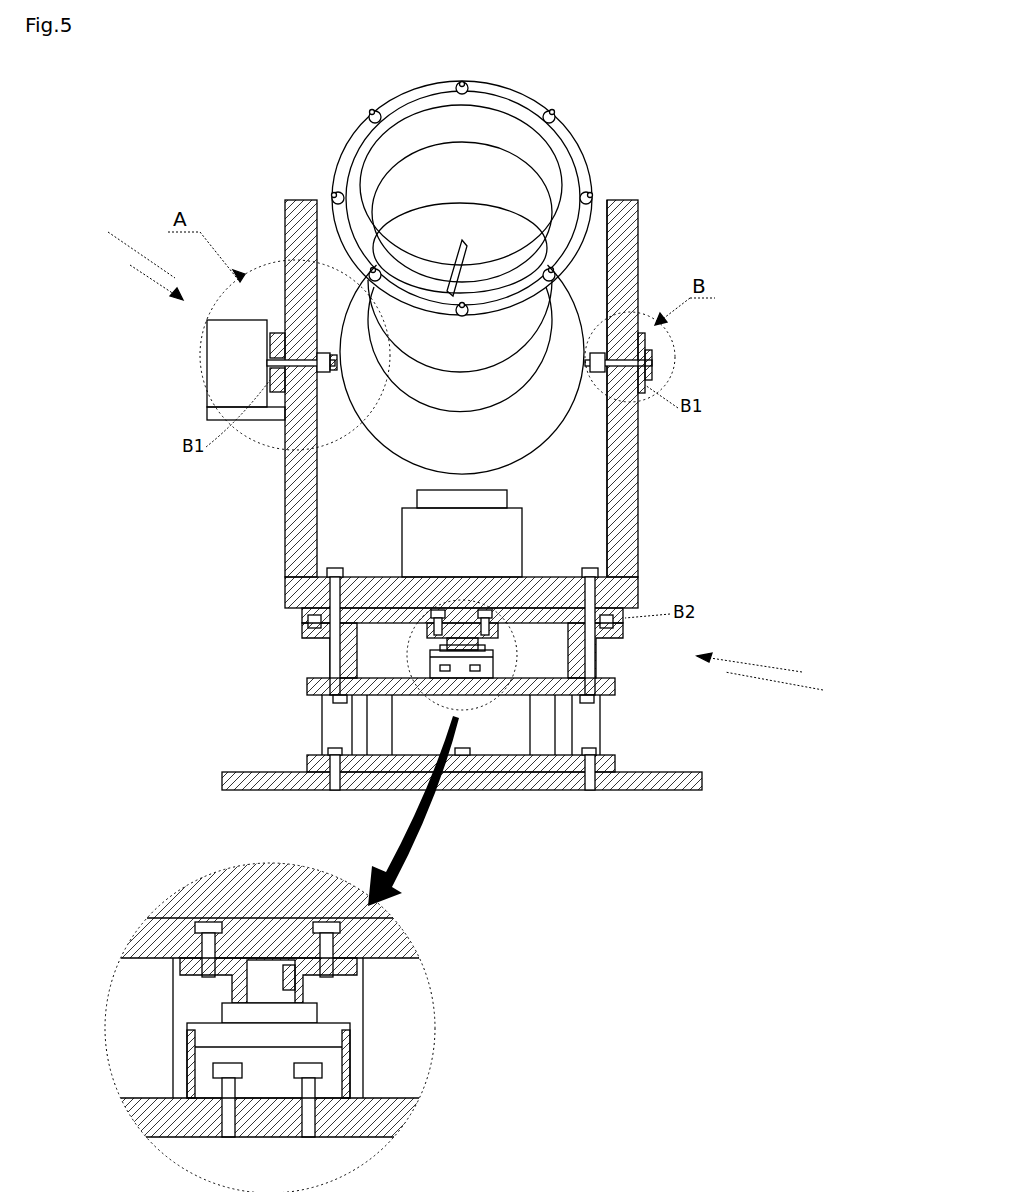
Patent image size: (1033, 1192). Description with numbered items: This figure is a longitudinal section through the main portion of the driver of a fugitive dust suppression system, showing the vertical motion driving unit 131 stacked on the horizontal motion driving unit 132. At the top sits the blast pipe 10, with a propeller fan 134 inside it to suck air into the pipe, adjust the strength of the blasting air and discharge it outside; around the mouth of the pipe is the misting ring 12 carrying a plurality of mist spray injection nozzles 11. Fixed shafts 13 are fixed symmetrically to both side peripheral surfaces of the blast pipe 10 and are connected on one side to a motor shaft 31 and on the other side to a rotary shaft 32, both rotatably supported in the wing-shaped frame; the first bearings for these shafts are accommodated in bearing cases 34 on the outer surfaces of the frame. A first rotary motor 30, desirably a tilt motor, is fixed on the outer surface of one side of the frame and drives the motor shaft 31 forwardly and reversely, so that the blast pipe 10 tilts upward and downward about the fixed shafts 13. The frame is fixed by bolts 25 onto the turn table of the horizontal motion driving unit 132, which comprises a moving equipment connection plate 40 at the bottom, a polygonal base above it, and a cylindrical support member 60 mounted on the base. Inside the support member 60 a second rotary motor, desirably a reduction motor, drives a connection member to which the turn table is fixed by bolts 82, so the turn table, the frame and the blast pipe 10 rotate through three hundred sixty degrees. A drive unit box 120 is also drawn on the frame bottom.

The blast pipe 10 is at (540, 415).
The mist spray injection nozzles 11 is at (562, 107).
The misting ring 12 is at (352, 135).
The fixed shafts 13 is at (630, 280).
The bolts 25 is at (290, 585).
The first rotary motor 30 is at (232, 350).
The motor shaft 31 is at (275, 368).
The rotary shaft 32 is at (655, 365).
The bearing cases 34 is at (648, 343).
The moving equipment connection plate 40 is at (660, 772).
The cylindrical support member 60 is at (598, 650).
The bolts 82 is at (190, 900).
The drive unit box 120 is at (515, 535).
The vertical motion driving unit 131 is at (126, 260).
The horizontal motion driving unit 132 is at (778, 678).
The propeller fan 134 is at (455, 255).